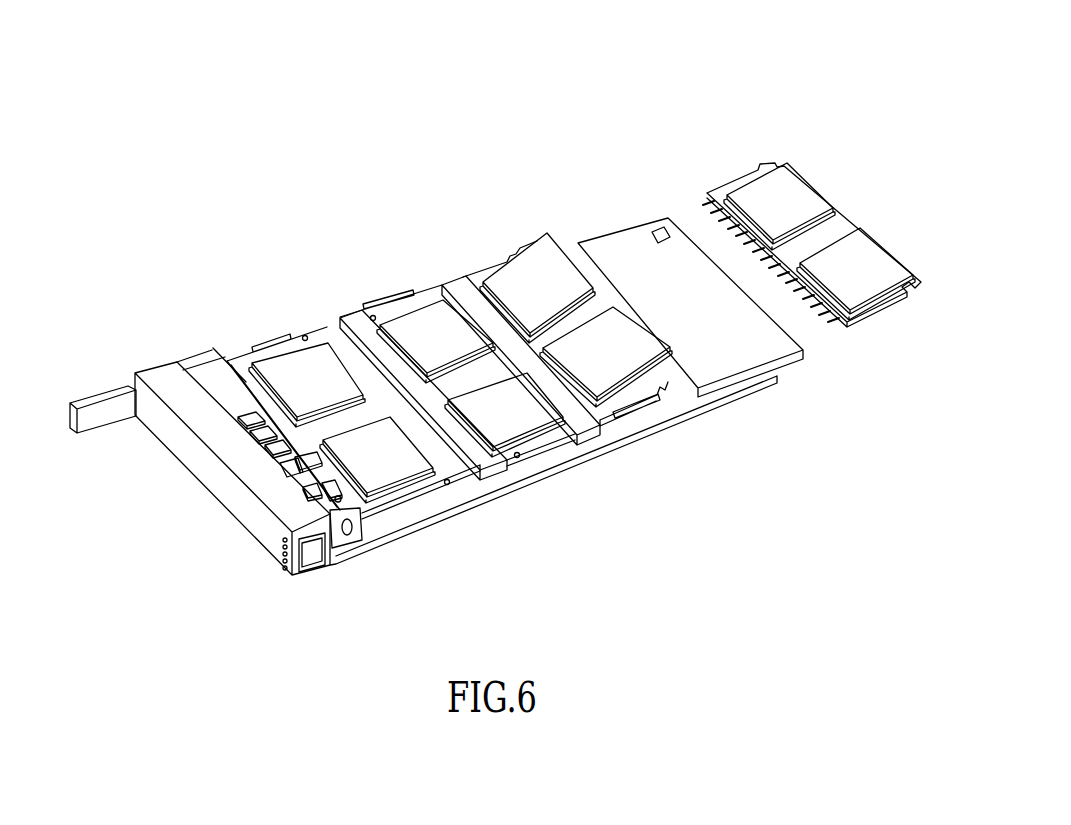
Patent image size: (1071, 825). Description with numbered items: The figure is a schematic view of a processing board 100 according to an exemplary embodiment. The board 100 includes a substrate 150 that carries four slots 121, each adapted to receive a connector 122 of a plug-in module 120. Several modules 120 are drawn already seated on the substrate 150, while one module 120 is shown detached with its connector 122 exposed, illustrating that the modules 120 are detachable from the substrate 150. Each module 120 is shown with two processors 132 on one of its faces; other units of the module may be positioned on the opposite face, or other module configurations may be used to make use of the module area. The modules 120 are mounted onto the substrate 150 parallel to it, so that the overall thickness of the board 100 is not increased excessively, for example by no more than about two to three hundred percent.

The board 100 is at (672, 46).
The plug-in module 120 is at (258, 346).
The slot 121 is at (352, 325).
The connector 122 is at (843, 328).
The processor 132 is at (295, 362).
The substrate 150 is at (592, 458).